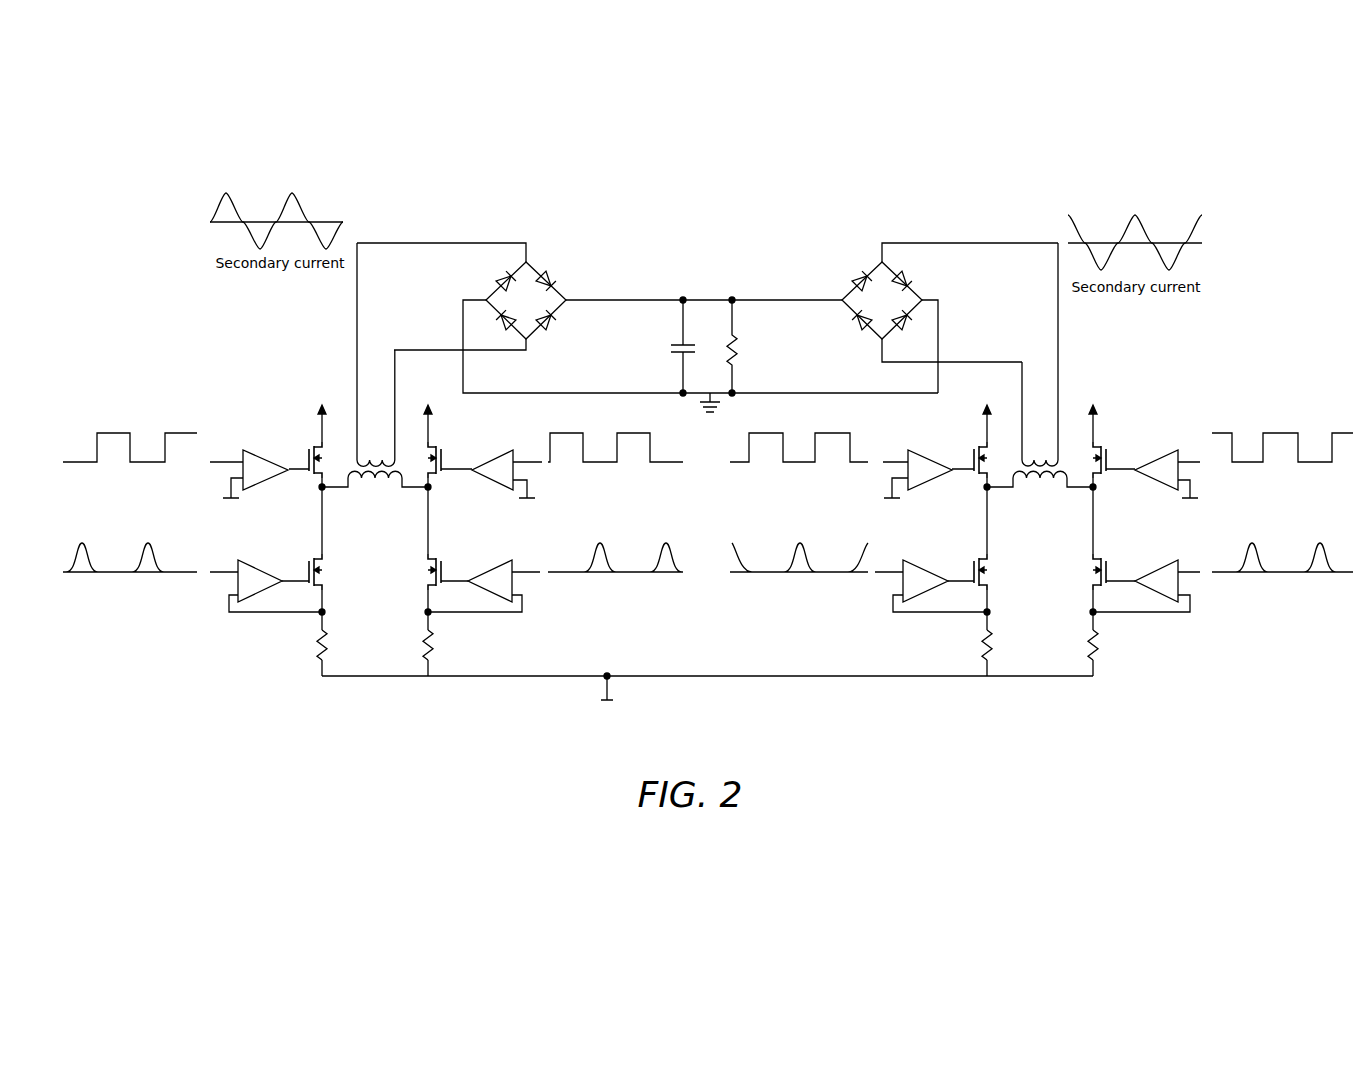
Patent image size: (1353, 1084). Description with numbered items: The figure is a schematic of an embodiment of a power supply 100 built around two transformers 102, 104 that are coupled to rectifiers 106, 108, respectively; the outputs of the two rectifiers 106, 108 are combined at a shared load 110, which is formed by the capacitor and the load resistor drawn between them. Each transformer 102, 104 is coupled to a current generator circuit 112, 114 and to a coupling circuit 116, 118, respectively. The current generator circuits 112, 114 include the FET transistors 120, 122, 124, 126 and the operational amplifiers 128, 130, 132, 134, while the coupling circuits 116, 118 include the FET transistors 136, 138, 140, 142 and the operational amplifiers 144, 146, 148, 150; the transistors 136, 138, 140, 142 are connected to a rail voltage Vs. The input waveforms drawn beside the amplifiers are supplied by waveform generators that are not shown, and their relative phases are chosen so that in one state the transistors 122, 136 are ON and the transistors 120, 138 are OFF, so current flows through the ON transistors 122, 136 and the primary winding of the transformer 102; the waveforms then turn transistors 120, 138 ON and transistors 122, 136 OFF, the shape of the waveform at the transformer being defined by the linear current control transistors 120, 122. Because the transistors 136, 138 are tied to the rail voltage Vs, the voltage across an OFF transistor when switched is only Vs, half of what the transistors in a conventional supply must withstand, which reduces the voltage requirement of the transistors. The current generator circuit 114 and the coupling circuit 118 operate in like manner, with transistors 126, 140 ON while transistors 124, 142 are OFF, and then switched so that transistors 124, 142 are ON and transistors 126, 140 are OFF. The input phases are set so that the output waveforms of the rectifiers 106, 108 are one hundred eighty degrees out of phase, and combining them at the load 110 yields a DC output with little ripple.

The power supply 100 is at (992, 718).
The transformer 102 is at (377, 478).
The transformer 104 is at (1042, 478).
The rectifier 106 is at (486, 297).
The rectifier 108 is at (922, 299).
The load 110 is at (735, 344).
The current generator circuit 112 is at (318, 650).
The current generator circuit 114 is at (1096, 646).
The coupling circuit 116 is at (254, 450).
The coupling circuit 118 is at (1160, 466).
The FET transistor 120 is at (309, 562).
The FET transistor 122 is at (444, 572).
The FET transistor 124 is at (977, 563).
The FET transistor 126 is at (1103, 572).
The operational amplifier 128 is at (238, 581).
The operational amplifier 130 is at (498, 592).
The operational amplifier 132 is at (918, 590).
The operational amplifier 134 is at (1180, 585).
The FET transistor 136 is at (309, 464).
The FET transistor 138 is at (441, 457).
The FET transistor 140 is at (974, 457).
The FET transistor 142 is at (1105, 461).
The operational amplifier 144 is at (231, 498).
The operational amplifier 146 is at (528, 484).
The operational amplifier 148 is at (924, 478).
The operational amplifier 150 is at (1192, 490).